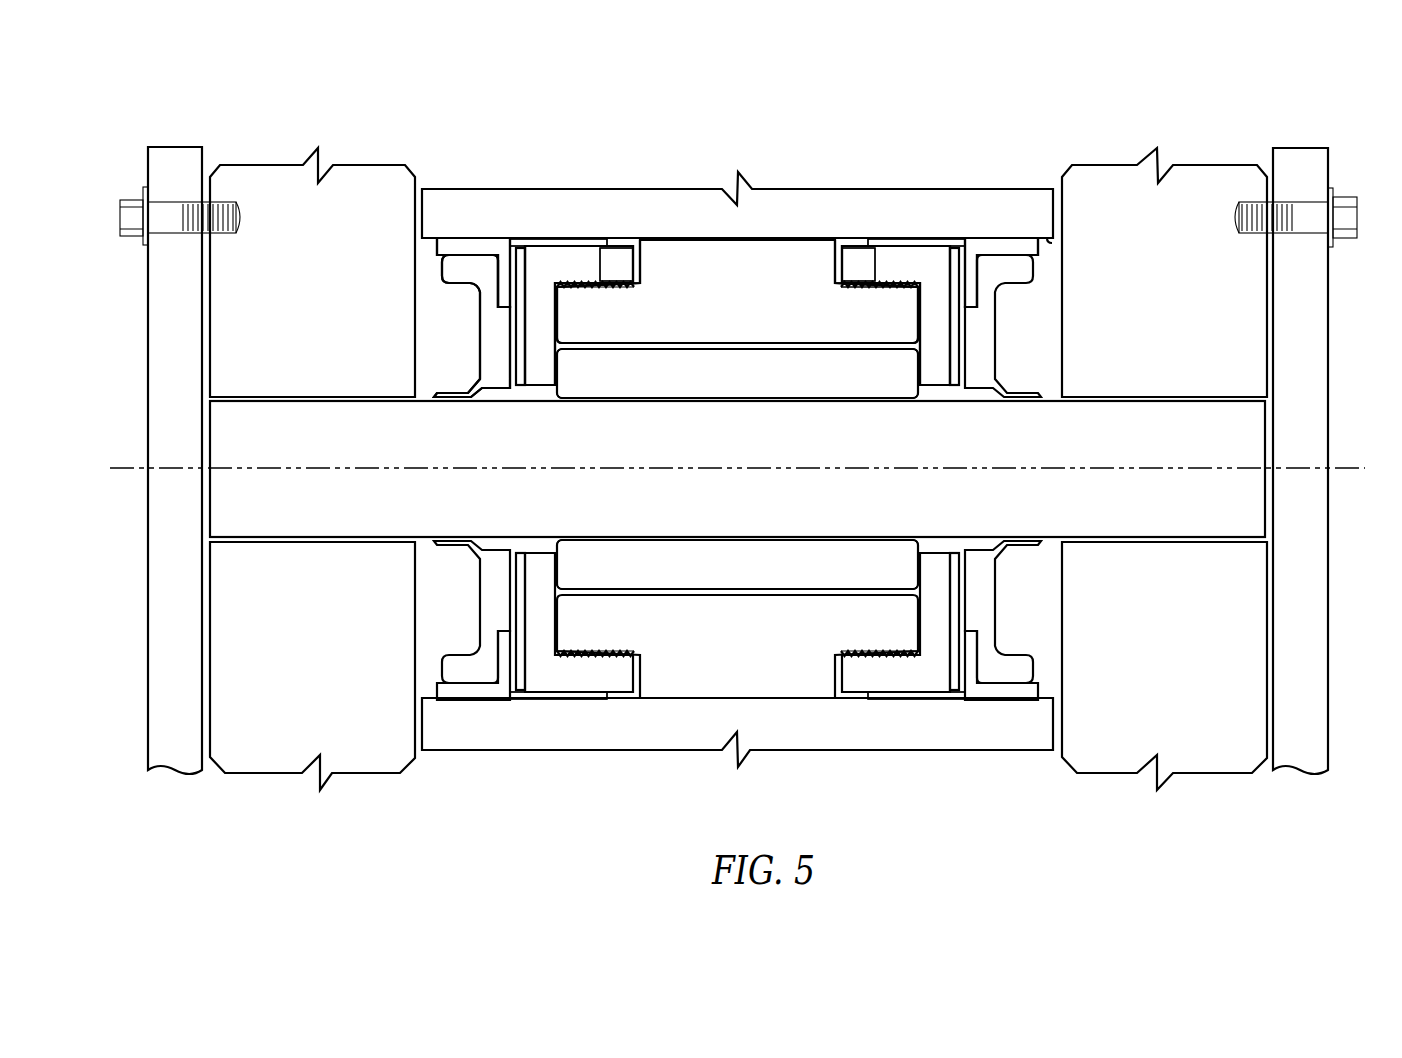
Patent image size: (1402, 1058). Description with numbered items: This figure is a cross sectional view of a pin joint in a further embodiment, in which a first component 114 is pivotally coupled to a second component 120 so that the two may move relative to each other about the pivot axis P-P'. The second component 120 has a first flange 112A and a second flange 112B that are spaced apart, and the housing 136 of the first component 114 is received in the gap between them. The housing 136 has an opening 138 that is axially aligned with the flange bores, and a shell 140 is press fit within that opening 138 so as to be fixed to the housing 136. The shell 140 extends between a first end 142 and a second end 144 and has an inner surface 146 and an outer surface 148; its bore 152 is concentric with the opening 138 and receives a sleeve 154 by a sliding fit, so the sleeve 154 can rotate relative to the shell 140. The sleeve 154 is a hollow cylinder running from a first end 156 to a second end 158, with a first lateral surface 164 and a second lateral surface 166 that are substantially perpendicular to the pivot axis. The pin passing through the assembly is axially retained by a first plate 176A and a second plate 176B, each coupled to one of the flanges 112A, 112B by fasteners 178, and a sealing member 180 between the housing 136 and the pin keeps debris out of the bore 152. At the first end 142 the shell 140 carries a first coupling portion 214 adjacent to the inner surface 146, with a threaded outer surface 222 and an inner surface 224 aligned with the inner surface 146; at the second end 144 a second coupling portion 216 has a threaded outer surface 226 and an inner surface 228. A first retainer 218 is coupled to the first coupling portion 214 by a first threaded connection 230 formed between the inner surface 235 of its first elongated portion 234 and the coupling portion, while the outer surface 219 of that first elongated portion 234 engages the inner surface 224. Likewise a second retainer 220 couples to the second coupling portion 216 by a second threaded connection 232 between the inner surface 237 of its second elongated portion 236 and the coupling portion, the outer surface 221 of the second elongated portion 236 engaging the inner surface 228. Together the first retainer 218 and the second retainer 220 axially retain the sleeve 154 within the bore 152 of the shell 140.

The first flange 112A is at (248, 170).
The second flange 112B is at (1225, 172).
The first component 114 is at (918, 286).
The second component 120 is at (1262, 140).
The housing 136 is at (986, 212).
The opening 138 is at (1052, 240).
The shell 140 is at (655, 253).
The first end 142 is at (557, 312).
The second end 144 is at (918, 333).
The inner surface 146 is at (758, 345).
The outer surface 148 is at (788, 253).
The bore 152 is at (680, 335).
The sleeve 154 is at (742, 348).
The first end 156 is at (550, 548).
The second end 158 is at (925, 548).
The first lateral surface 164 is at (435, 400).
The second lateral surface 166 is at (1040, 400).
The first plate 176A is at (167, 717).
The second plate 176B is at (1310, 717).
The fasteners 178 is at (132, 205).
The sealing member 180 is at (455, 262).
The first coupling portion 214 is at (612, 262).
The second coupling portion 216 is at (862, 262).
The first retainer 218 is at (538, 273).
The outer surface 219 is at (605, 692).
The second retainer 220 is at (937, 273).
The outer surface 221 is at (870, 692).
The outer surface 222 is at (595, 318).
The inner surface 224 is at (577, 352).
The outer surface 226 is at (885, 318).
The inner surface 228 is at (900, 350).
The first threaded connection 230 is at (557, 286).
The second threaded connection 232 is at (925, 268).
The first elongated portion 234 is at (623, 262).
The inner surface 235 is at (580, 657).
The second elongated portion 236 is at (848, 262).
The inner surface 237 is at (895, 657).